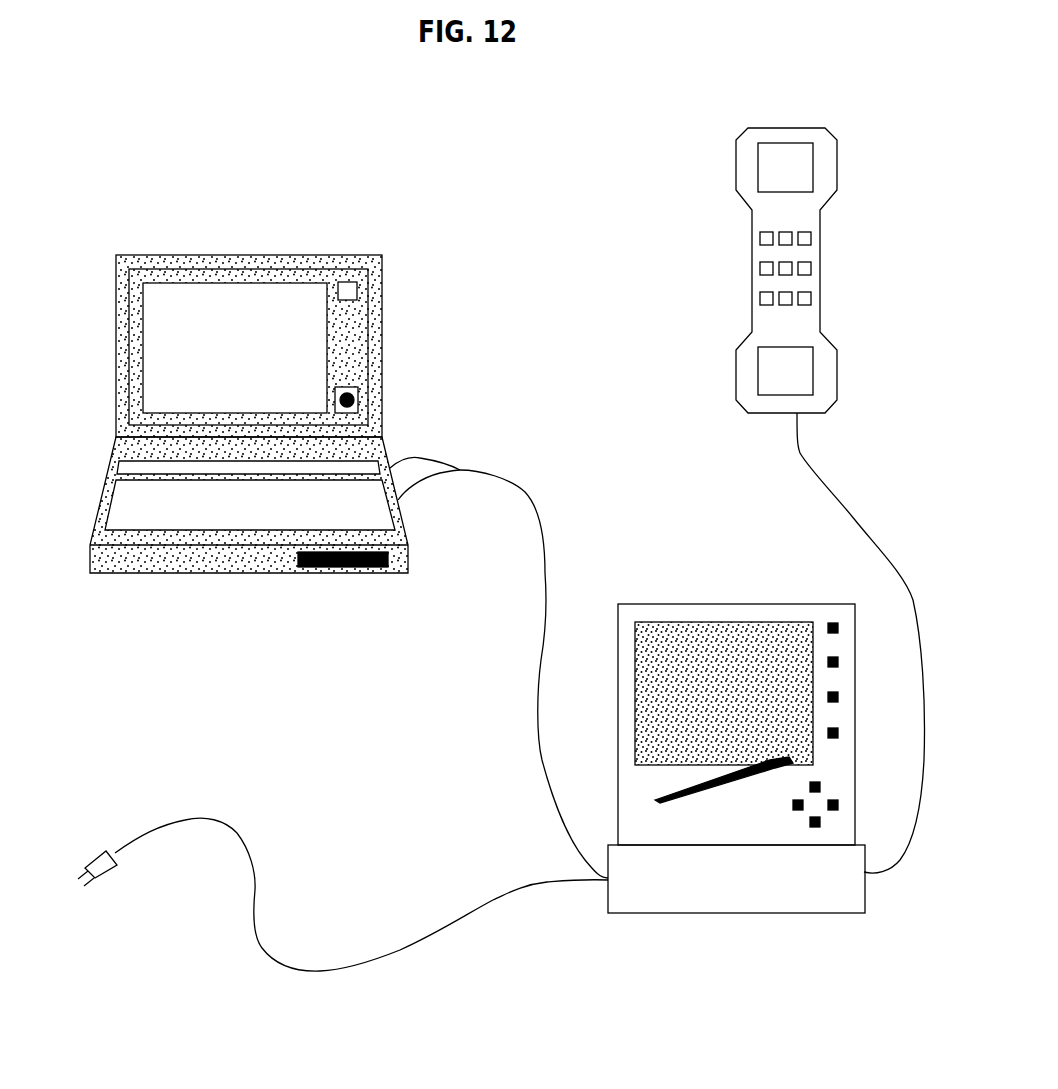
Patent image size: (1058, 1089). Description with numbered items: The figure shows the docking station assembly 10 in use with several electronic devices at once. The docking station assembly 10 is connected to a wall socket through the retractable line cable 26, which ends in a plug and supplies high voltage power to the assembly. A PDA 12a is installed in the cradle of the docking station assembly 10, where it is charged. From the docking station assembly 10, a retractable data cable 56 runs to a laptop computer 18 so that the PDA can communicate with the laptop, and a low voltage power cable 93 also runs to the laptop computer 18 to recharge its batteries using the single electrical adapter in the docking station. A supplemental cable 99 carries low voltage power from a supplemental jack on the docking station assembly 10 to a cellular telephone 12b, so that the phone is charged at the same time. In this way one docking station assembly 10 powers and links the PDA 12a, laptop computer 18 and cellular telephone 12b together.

The laptop computer 18 is at (300, 400).
The data cable 56 is at (499, 618).
The low voltage power cable 93 is at (454, 514).
The supplemental cable 99 is at (861, 643).
The retractable line cable 26 is at (343, 933).
The docking station assembly 10 is at (735, 934).
The PDA 12a is at (725, 667).
The cellular telephone 12b is at (709, 261).